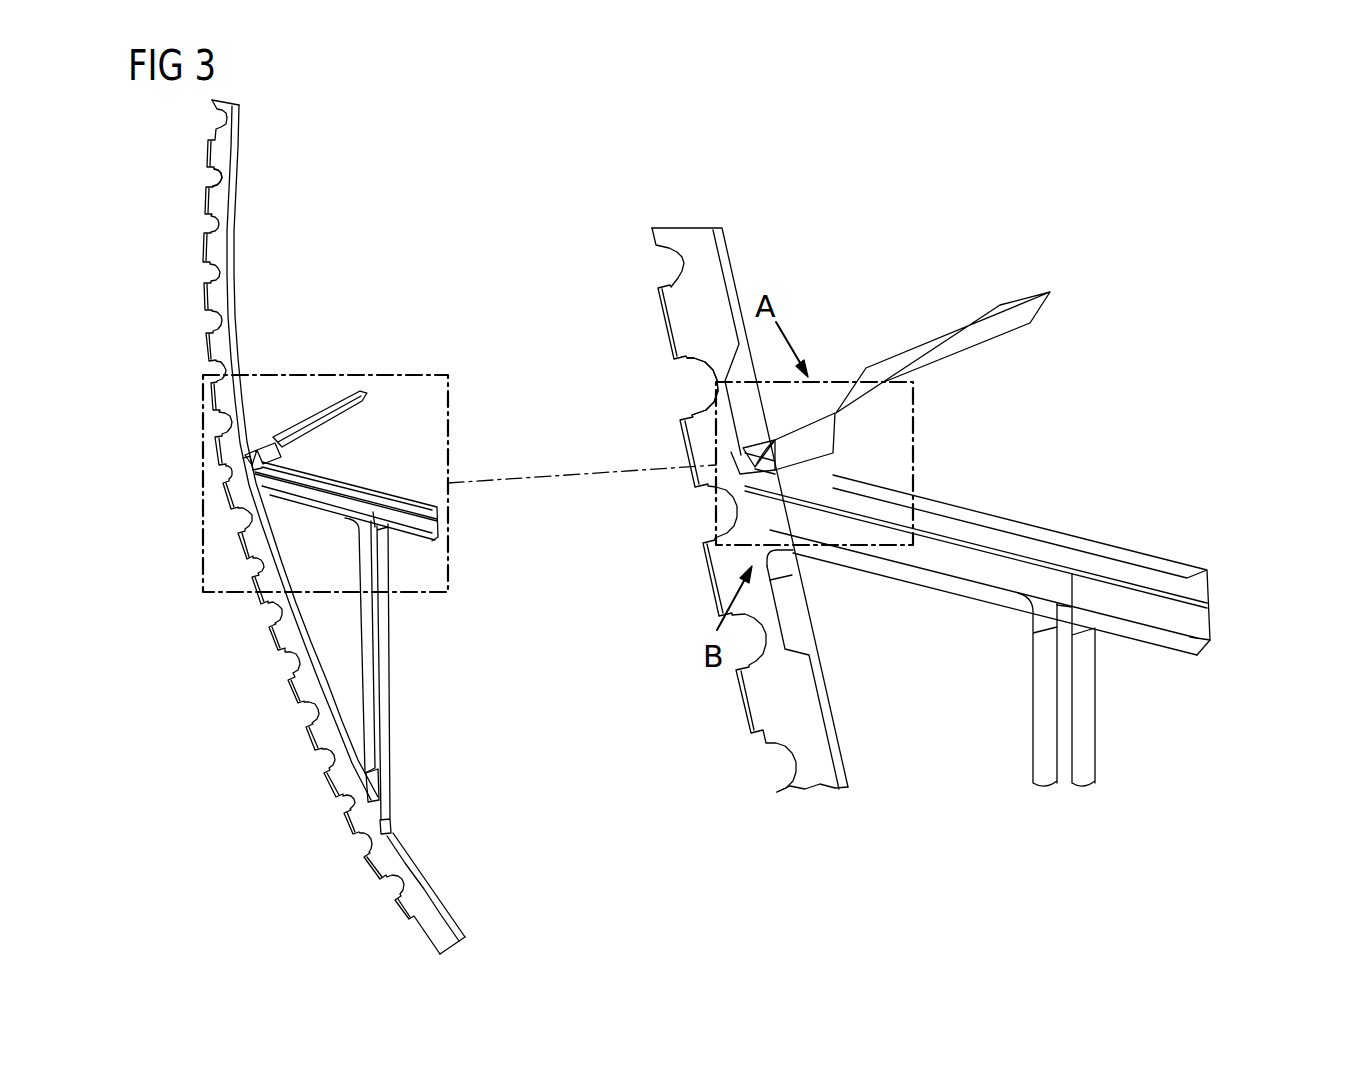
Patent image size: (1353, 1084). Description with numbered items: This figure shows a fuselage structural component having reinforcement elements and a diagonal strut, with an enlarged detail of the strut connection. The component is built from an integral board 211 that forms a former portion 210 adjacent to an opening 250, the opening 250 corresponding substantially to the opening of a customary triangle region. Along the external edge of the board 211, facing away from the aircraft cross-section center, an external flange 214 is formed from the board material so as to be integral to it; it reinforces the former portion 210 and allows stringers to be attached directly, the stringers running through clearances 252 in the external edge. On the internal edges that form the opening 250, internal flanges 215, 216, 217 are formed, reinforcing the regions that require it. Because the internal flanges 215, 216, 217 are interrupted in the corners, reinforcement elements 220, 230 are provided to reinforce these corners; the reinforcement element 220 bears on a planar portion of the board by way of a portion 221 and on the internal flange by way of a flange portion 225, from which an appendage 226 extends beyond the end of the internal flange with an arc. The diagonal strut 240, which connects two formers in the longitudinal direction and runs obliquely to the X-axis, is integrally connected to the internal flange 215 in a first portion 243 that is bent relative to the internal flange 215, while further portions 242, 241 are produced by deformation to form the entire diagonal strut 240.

The former portion 210 is at (273, 706).
The integral board 211 is at (697, 293).
The external flange 214 is at (418, 906).
The internal flange 215 is at (1040, 532).
The internal flange 216 is at (1040, 742).
The internal flange 217 is at (728, 345).
The reinforcement element 220 is at (293, 520).
The portion of the reinforcement element 221 is at (1190, 626).
The flange portion 225 is at (1197, 650).
The appendage 226 is at (916, 577).
The reinforcement element 230 is at (355, 812).
The diagonal strut 240 is at (309, 388).
The further portion of the diagonal strut 241 is at (985, 328).
The further portion of the diagonal strut 242 is at (823, 441).
The first portion 243 is at (768, 455).
The opening 250 is at (317, 626).
The clearances 252 is at (213, 181).